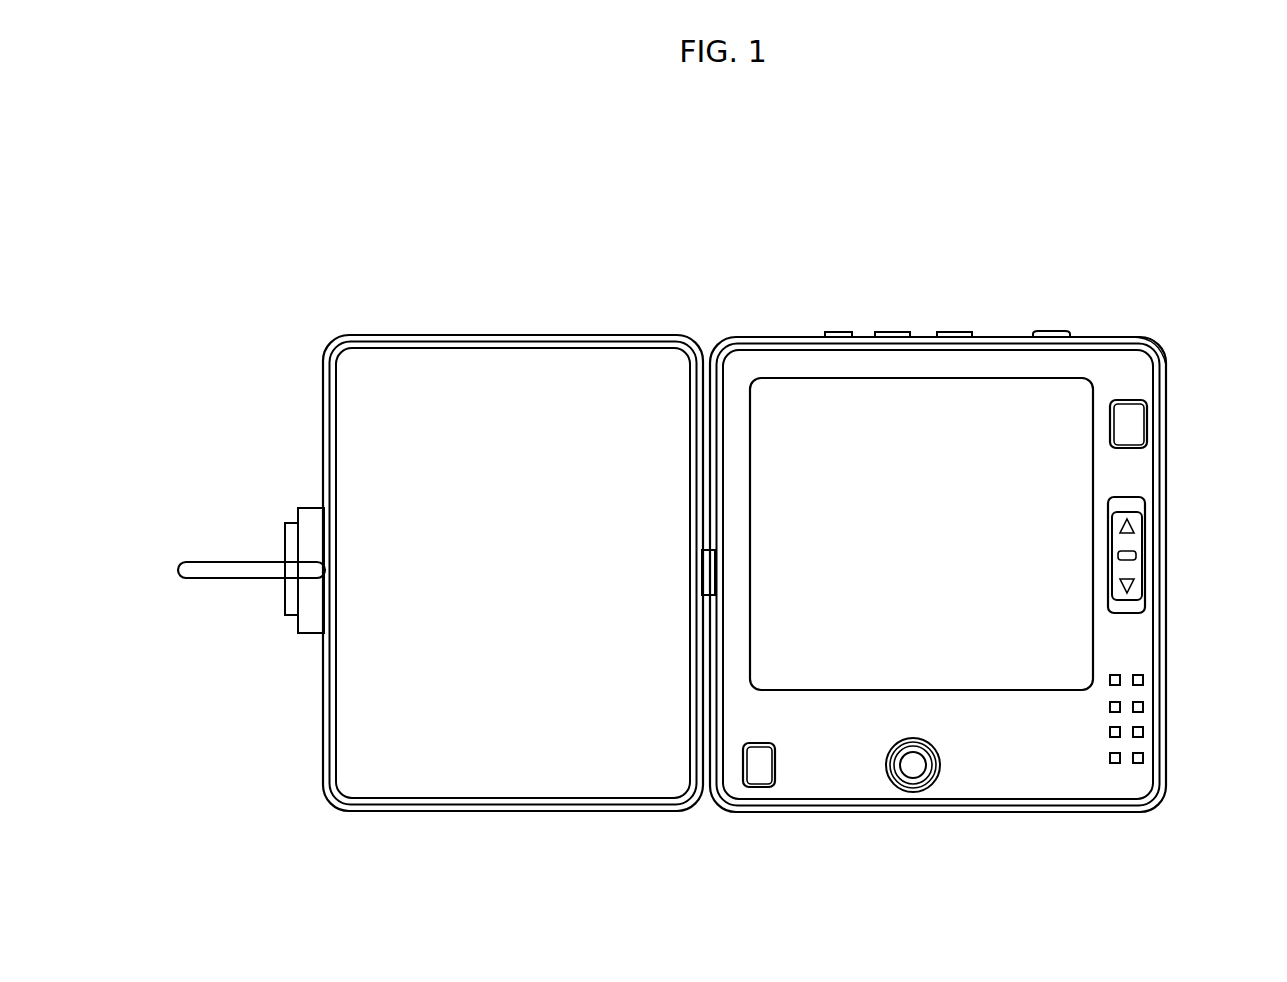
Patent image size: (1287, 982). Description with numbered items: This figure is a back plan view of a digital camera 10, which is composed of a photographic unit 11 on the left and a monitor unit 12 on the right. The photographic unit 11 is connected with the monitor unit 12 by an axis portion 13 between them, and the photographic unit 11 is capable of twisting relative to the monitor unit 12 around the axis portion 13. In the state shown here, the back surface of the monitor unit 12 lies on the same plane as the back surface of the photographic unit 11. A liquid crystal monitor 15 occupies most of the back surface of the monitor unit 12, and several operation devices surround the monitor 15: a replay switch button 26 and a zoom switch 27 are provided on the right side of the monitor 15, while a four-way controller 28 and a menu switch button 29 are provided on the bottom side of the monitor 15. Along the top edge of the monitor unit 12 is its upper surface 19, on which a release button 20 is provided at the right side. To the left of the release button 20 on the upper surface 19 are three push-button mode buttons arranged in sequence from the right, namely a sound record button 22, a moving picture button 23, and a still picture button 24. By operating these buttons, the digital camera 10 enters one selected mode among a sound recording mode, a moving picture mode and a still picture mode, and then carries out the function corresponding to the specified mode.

The digital camera 10 is at (719, 300).
The photographic unit 11 is at (526, 318).
The monitor unit 12 is at (896, 266).
The axis portion 13 is at (707, 570).
The liquid crystal monitor 15 is at (1012, 658).
The upper surface 19 is at (1124, 336).
The release button 20 is at (1049, 331).
The sound record button 22 is at (921, 284).
The moving picture button 23 is at (892, 332).
The still picture button 24 is at (838, 332).
The replay switch button 26 is at (1125, 423).
The zoom switch 27 is at (1123, 545).
The four-way controller 28 is at (912, 790).
The menu switch button 29 is at (757, 787).